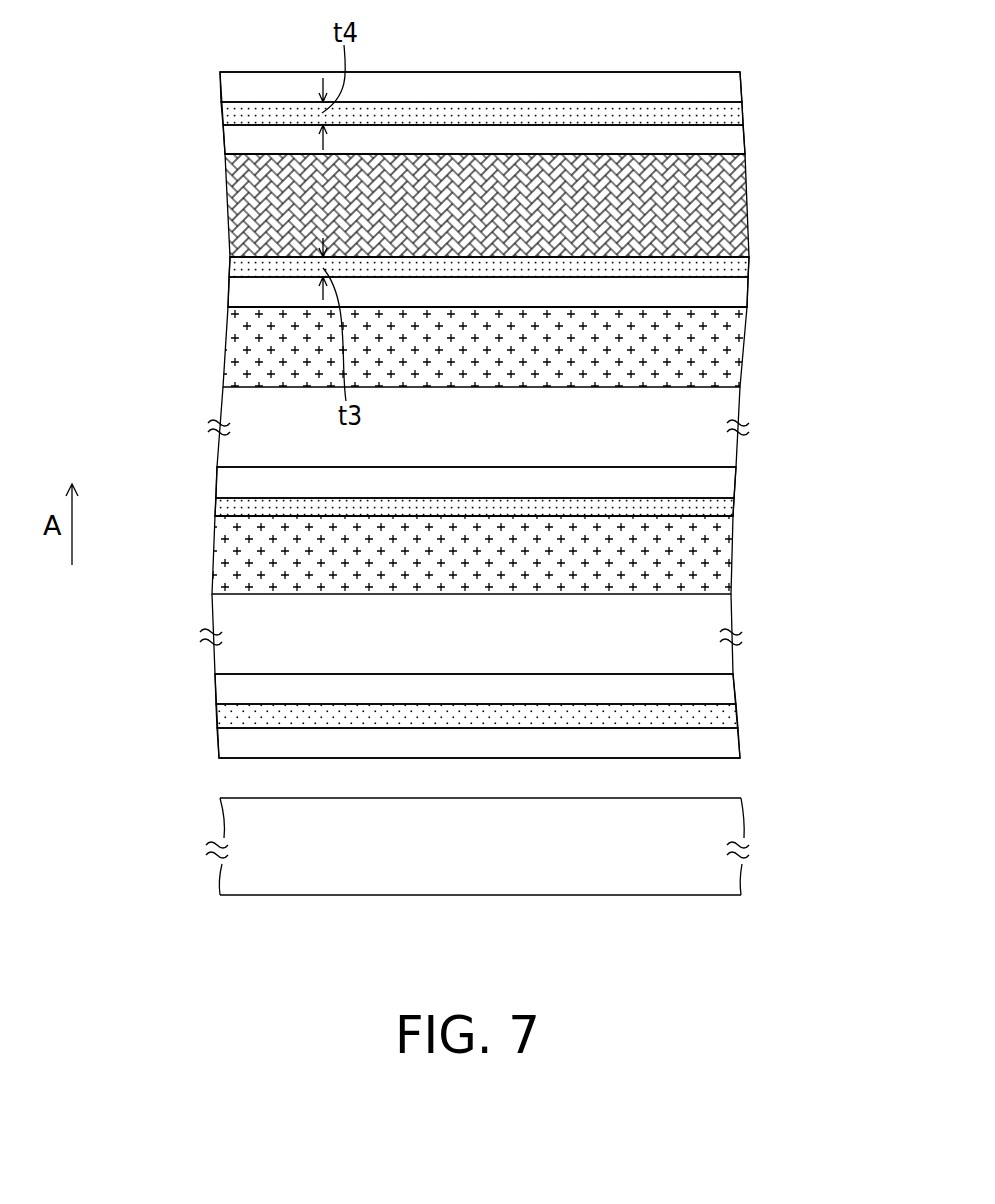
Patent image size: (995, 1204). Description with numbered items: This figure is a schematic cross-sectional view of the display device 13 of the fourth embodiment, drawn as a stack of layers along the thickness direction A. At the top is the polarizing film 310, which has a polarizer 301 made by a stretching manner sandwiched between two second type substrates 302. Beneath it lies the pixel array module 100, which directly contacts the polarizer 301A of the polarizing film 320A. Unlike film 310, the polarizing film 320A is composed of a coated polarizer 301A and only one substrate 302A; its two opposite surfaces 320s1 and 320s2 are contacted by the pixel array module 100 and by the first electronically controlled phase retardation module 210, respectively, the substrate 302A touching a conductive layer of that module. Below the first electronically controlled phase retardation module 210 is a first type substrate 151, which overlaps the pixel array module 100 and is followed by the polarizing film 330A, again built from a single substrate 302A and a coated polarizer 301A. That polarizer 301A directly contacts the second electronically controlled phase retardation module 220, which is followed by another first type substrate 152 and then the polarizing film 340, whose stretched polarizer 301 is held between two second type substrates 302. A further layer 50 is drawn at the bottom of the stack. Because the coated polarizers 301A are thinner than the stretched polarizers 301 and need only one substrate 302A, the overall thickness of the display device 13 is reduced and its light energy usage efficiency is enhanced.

The second type substrate 302 is at (725, 88).
The polarizer 301 is at (725, 116).
The polarizing film 310 is at (203, 72).
The pixel array module 100 is at (203, 155).
The polarizer 301A is at (725, 268).
The substrate 302A is at (725, 293).
The polarizing film 320A is at (203, 258).
The surface of polarizing film 320s1 is at (710, 257).
The surface of polarizing film 320s2 is at (708, 307).
The first electronically controlled phase retardation module 210 is at (203, 308).
The first type substrate 151 is at (725, 411).
The polarizing film 330A is at (203, 468).
The second electronically controlled phase retardation module 220 is at (203, 517).
The first type substrate 152 is at (720, 621).
The polarizing film 340 is at (203, 675).
The carrier substrate 50 is at (203, 799).
The display device 13 is at (826, 986).